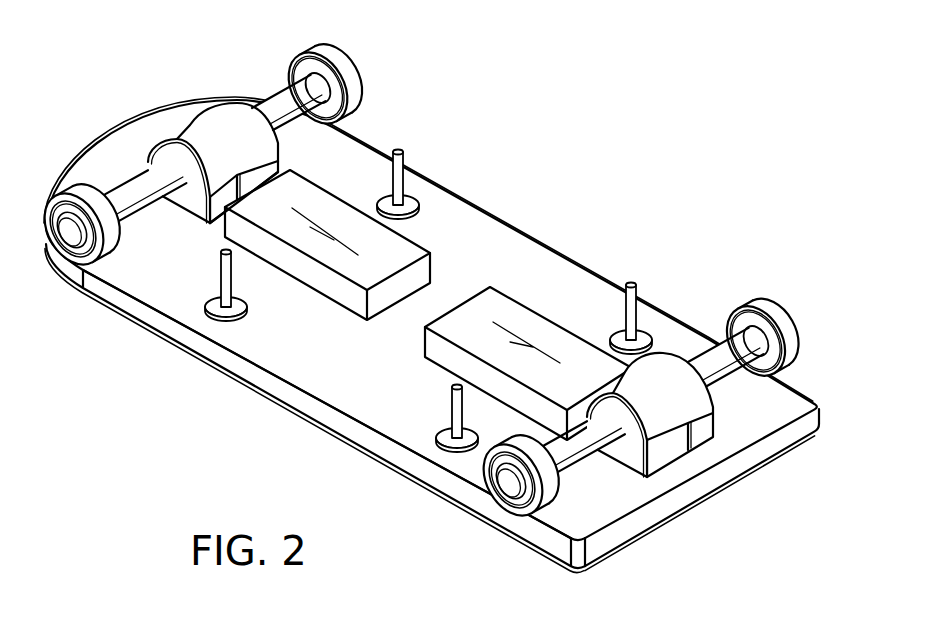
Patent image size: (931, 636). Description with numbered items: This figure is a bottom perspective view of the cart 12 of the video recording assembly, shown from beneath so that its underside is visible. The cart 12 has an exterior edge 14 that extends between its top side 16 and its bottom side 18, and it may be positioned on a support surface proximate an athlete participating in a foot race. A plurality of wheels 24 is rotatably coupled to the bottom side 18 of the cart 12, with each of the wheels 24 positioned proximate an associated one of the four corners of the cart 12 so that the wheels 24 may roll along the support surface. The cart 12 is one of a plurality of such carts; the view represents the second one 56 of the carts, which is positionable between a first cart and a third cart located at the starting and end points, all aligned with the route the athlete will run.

The cart 12 is at (431, 335).
The exterior edge 14 is at (316, 414).
The top side 16 is at (414, 481).
The bottom side 18 is at (483, 238).
The wheels 24 is at (63, 194).
The second one of the carts 56 is at (666, 522).